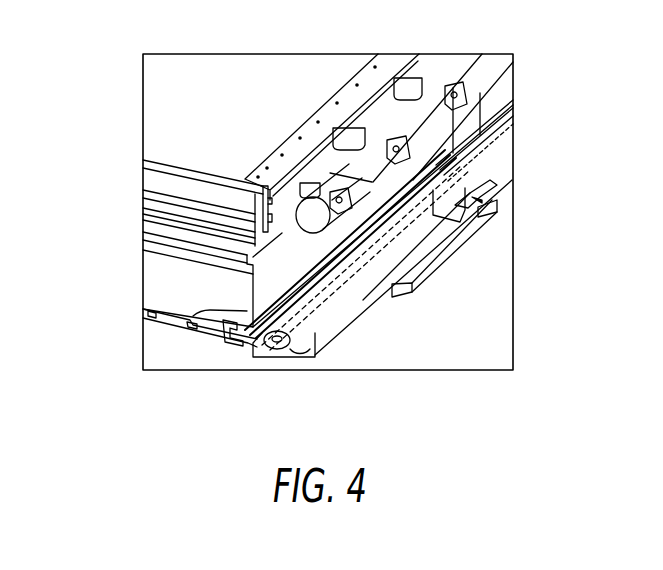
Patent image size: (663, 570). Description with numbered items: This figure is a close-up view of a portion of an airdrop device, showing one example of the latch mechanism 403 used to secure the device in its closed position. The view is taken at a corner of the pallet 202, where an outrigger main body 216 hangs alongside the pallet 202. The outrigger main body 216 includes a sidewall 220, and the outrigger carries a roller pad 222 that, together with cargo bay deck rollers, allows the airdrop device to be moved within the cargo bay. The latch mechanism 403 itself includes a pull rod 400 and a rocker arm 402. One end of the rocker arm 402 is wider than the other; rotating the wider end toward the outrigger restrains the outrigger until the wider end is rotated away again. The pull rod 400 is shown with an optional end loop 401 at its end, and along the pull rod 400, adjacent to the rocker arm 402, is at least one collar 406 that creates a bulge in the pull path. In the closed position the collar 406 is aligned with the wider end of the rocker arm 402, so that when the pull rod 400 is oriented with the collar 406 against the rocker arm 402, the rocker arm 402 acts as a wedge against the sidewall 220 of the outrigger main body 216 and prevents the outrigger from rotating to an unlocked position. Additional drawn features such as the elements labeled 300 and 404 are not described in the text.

The pallet 202 is at (180, 125).
The outrigger main body 216 is at (168, 285).
The sidewall 220 is at (193, 316).
The roller pad 222 is at (480, 68).
The slot member 300 is at (225, 325).
The pull rod 400 is at (383, 312).
The end loop 401 is at (274, 350).
The rocker arm 402 is at (460, 190).
The latch mechanism 403 is at (482, 200).
The rail clips 404 is at (407, 87).
The collar 406 is at (437, 203).